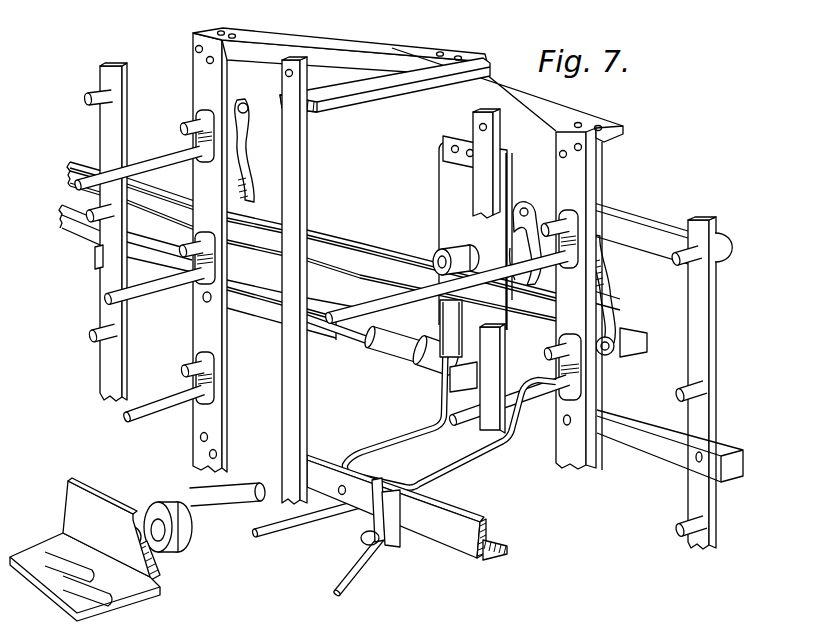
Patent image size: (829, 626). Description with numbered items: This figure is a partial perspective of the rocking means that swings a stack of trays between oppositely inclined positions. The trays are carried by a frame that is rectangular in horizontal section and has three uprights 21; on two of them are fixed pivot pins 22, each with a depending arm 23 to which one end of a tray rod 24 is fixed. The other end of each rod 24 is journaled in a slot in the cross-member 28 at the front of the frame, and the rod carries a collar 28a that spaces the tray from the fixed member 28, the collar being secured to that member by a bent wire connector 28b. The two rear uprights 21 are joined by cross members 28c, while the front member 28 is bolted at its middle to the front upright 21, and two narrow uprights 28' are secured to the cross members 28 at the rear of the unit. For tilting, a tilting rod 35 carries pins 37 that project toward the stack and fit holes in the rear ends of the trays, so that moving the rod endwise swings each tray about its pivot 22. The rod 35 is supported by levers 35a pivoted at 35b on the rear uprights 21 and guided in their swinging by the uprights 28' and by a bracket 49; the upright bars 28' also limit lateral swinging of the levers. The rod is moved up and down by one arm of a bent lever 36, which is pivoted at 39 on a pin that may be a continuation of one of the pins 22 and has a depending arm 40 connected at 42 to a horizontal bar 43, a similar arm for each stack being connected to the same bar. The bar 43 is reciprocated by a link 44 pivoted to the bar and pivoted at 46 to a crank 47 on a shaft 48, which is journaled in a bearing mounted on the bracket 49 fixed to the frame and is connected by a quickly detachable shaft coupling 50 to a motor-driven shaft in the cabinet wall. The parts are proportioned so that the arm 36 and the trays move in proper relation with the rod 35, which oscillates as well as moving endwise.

The uprights 21 is at (597, 186).
The pivot pins 22 is at (186, 128).
The depending arm 23 is at (195, 144).
The tray rod 24 is at (80, 188).
The cross-member 28 is at (283, 474).
The collar 28a is at (185, 543).
The bent wire connector 28b is at (165, 577).
The cross members 28c is at (470, 566).
The narrow uprights 28' is at (393, 280).
The tilting rod 35 is at (101, 131).
The levers 35a is at (663, 452).
The pivot 35b is at (566, 424).
The bent lever 36 is at (667, 222).
The pins 37 is at (700, 265).
The pivot 39 is at (243, 117).
The depending arm 40 is at (622, 307).
The connection 42 is at (609, 355).
The horizontal bar 43 is at (347, 250).
The link 44 is at (356, 343).
The pivot 46 is at (425, 377).
The crank 47 is at (438, 319).
The shaft 48 is at (437, 259).
The bracket 49 is at (440, 206).
The shaft coupling 50 is at (520, 205).